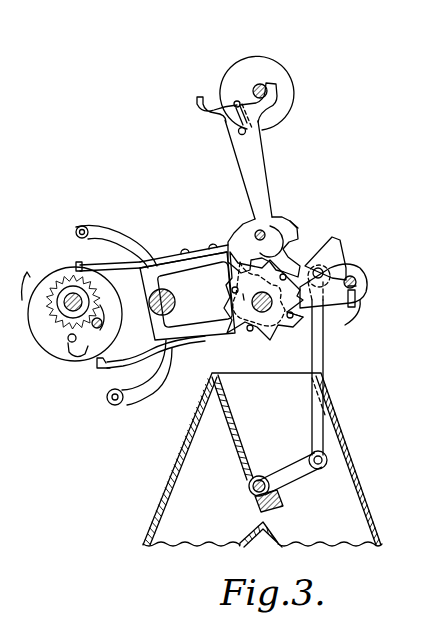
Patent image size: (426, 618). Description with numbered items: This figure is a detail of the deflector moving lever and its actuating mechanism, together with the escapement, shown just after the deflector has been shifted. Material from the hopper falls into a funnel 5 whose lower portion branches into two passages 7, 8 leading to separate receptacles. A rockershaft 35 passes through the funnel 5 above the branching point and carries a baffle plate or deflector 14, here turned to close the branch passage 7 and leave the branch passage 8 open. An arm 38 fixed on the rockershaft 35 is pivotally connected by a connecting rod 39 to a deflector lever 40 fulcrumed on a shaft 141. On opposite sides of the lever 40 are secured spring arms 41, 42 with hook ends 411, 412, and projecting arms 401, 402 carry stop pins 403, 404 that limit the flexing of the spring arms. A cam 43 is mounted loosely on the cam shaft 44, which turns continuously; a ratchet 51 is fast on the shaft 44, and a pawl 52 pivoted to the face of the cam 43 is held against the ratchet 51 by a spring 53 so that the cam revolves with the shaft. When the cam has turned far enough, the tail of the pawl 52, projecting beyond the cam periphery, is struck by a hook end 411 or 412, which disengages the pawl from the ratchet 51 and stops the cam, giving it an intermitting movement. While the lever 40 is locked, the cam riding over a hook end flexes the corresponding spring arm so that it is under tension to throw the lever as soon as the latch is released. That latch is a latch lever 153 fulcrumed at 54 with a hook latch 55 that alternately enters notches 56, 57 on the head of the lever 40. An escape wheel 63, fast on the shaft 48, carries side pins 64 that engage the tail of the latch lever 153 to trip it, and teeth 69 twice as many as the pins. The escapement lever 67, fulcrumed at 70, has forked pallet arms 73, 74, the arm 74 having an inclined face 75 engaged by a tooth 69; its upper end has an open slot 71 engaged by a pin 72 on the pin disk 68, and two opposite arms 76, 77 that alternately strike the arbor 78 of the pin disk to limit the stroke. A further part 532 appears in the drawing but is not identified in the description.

The funnel 5 is at (262, 460).
The branch passage 7 is at (208, 535).
The branch passage 8 is at (342, 538).
The baffle plate or deflector 14 is at (245, 458).
The rockershaft 35 is at (249, 492).
The arm 38 is at (297, 478).
The connecting rod 39 is at (325, 378).
The deflector lever 40 is at (346, 266).
The arm 401 is at (143, 383).
The arm 402 is at (116, 234).
The stop pin 403 is at (117, 406).
The stop pin 404 is at (82, 226).
The spring arm 41 is at (108, 370).
The hook end 411 is at (96, 367).
The hook end 412 is at (77, 262).
The spring arm 42 is at (114, 261).
The cam 43 is at (57, 345).
The cam shaft 44 is at (66, 294).
The shaft 48 is at (225, 304).
The ratchet 51 is at (58, 315).
The pawl 52 is at (103, 313).
The spring 53 is at (78, 360).
The fulcrum 54 is at (357, 282).
The hook latch 55 is at (356, 304).
The notch 56 is at (341, 241).
The notch 57 is at (355, 318).
The escape wheel 63 is at (271, 334).
The pins 64 is at (249, 331).
The escapement lever 67 is at (258, 172).
The pin disk 68 is at (292, 97).
The teeth 69 is at (289, 318).
The fulcrum 70 is at (266, 228).
The open slot 71 is at (240, 122).
The pin 72 is at (234, 102).
The pallet arm 73 is at (228, 240).
The pallet arm 74 is at (294, 236).
The inclined face 75 is at (321, 266).
The arm 76 is at (196, 100).
The arm 77 is at (278, 92).
The arbor 78 is at (263, 85).
The shaft 141 is at (177, 300).
The latch lever 153 is at (360, 293).
The pin 532 is at (323, 328).